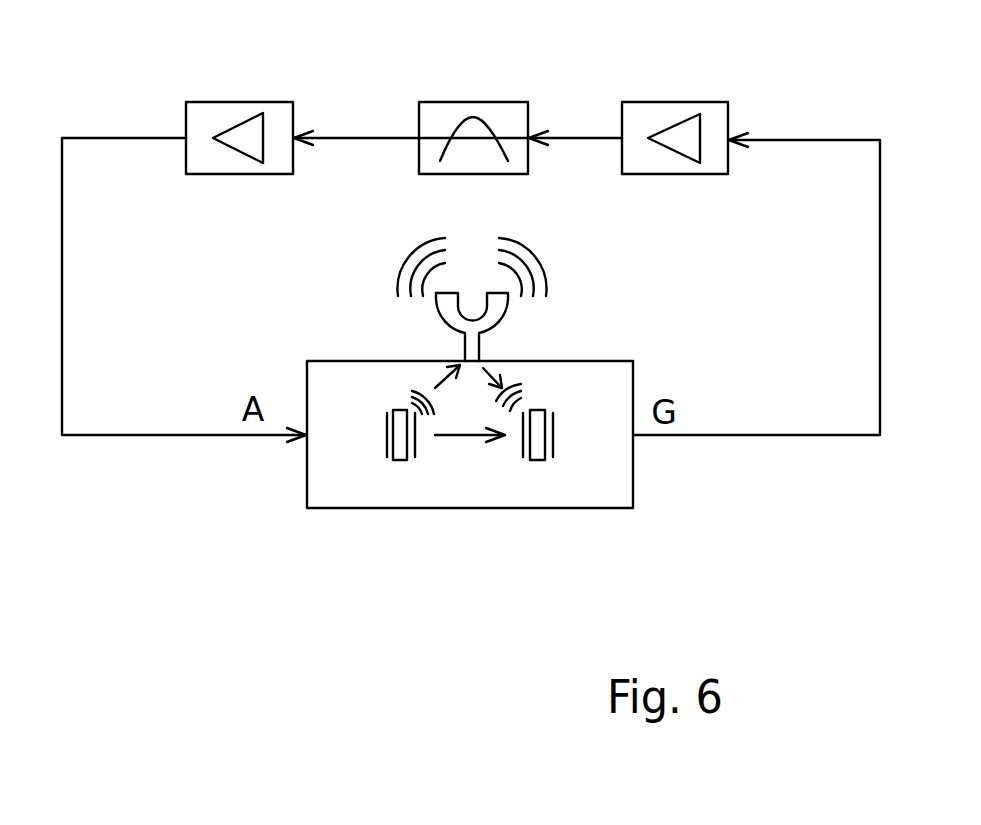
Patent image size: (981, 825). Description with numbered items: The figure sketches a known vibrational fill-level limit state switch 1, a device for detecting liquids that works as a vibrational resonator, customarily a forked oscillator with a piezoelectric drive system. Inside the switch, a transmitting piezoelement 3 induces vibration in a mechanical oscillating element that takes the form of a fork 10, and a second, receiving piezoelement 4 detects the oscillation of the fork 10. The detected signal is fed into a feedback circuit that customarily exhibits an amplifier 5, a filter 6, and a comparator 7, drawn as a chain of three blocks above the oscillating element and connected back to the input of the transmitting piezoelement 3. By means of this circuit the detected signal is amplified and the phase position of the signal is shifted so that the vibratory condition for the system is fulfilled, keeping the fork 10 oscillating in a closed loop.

The vibrational fill-level limit state switch 1 is at (811, 119).
The transmitting piezoelement 3 is at (400, 410).
The receiving piezoelement 4 is at (542, 410).
The amplifier 5 is at (688, 102).
The filter 6 is at (488, 102).
The comparator 7 is at (252, 102).
The fork 10 is at (505, 317).